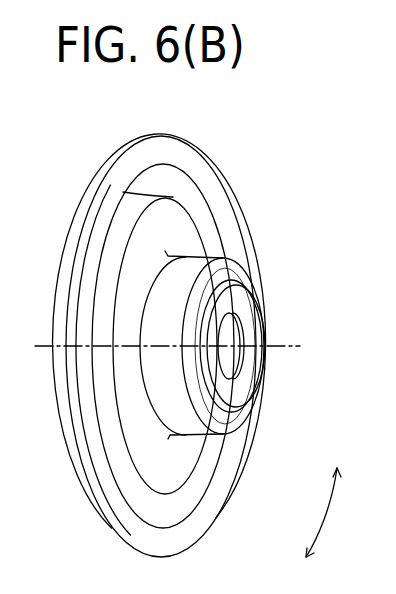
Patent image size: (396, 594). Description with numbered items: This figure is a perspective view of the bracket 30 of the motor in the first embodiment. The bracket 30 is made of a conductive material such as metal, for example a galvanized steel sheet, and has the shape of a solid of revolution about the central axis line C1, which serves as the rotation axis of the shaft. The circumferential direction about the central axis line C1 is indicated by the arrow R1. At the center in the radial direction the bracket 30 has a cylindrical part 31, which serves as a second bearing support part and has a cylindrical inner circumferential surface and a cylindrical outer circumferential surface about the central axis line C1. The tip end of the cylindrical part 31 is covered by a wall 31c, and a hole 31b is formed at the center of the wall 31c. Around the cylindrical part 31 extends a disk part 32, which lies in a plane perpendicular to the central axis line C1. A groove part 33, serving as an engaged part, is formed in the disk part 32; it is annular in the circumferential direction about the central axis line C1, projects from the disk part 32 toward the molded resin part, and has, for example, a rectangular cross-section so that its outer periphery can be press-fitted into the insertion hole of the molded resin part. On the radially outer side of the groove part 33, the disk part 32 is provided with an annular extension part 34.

The bracket 30 is at (82, 155).
The annular extension part 34 is at (172, 150).
The groove part 33 is at (147, 185).
The disk part 32 is at (177, 228).
The cylindrical part 31 is at (188, 262).
The hole 31b is at (243, 337).
The wall 31c is at (238, 388).
The central axis line C1 is at (300, 345).
The arrow indicating circumferential direction R1 is at (335, 512).